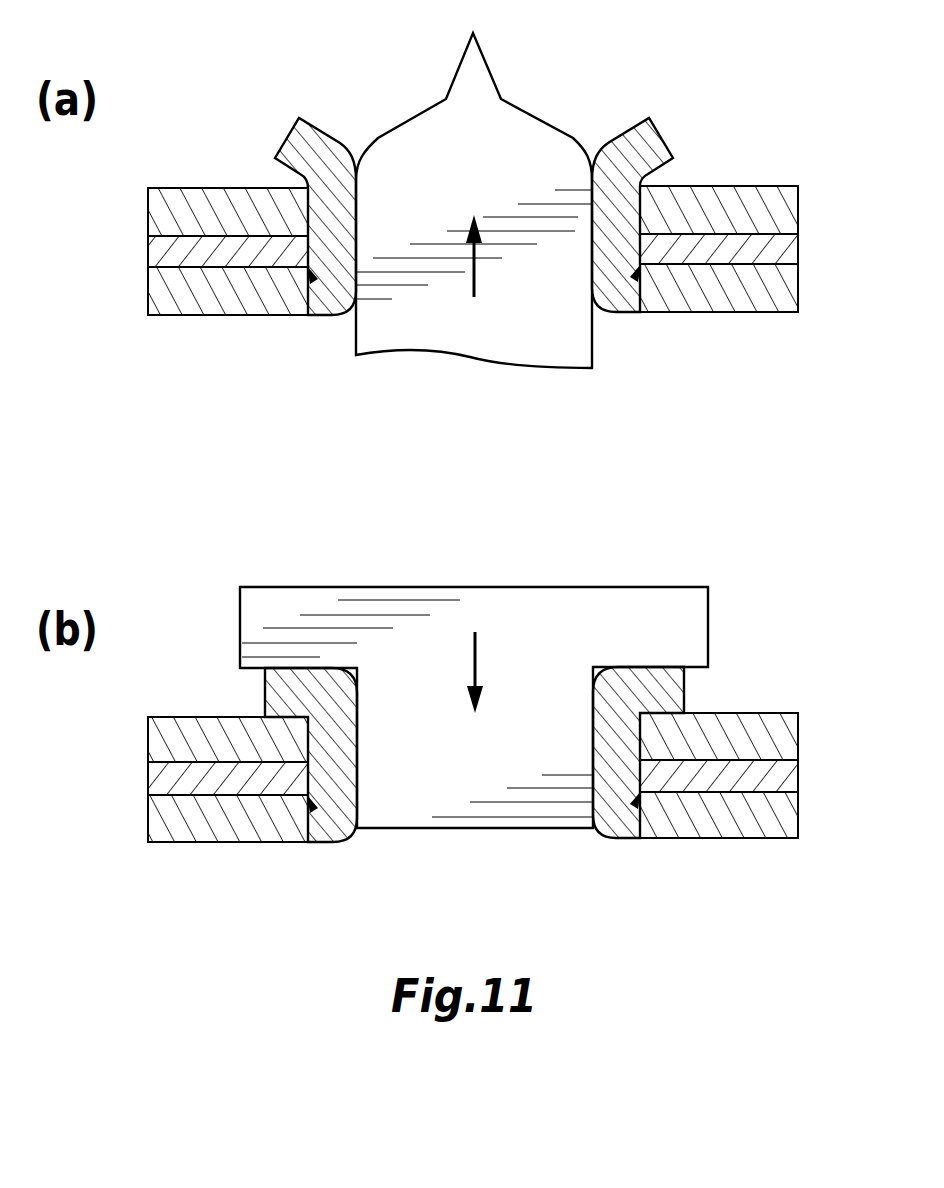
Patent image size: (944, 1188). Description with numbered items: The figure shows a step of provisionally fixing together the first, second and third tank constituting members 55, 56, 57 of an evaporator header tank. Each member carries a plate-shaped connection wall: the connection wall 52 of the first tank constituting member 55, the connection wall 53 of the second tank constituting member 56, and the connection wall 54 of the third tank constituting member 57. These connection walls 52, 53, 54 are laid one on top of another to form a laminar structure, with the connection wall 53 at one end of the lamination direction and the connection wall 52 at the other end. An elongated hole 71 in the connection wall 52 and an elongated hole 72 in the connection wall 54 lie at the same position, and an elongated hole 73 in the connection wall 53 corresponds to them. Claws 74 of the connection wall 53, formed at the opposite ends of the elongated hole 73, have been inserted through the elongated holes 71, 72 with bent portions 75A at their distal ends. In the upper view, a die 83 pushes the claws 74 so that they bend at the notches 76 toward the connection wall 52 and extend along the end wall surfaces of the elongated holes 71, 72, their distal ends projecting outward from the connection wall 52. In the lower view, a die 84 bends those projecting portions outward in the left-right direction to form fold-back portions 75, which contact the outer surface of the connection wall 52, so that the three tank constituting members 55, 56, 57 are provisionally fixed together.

The connection wall 52 is at (157, 210).
The connection wall 53 is at (162, 302).
The connection wall 54 is at (157, 250).
The first tank constituting member 55 is at (787, 205).
The second tank constituting member 56 is at (785, 297).
The third tank constituting member 57 is at (785, 248).
The elongated hole 71 is at (308, 217).
The elongated hole 72 is at (310, 248).
The elongated hole 73 is at (356, 275).
The claw 74 is at (345, 229).
The fold-back portion 75 is at (277, 688).
The bent portion 75A is at (296, 143).
The notch 76 is at (308, 275).
The die 83 is at (578, 357).
The die 84 is at (497, 605).